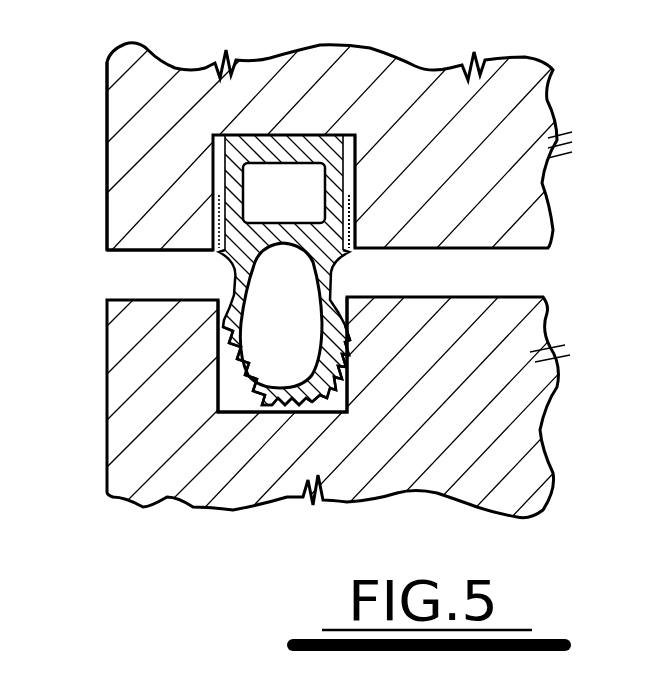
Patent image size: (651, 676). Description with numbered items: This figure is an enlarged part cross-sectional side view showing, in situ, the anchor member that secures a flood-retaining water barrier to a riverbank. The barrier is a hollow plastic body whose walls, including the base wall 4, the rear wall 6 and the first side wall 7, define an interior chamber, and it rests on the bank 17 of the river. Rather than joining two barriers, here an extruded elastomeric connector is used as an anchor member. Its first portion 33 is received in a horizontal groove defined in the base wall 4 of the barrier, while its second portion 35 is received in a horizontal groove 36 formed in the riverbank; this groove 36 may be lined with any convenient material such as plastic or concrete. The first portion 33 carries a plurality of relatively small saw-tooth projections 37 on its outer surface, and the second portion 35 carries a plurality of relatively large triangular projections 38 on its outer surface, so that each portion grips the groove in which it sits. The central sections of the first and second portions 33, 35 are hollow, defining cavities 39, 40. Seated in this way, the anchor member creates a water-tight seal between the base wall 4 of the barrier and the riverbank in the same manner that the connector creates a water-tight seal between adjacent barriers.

The base wall 4 is at (123, 255).
The rear wall 6 is at (107, 191).
The first side wall 7 is at (473, 232).
The bank 17 is at (495, 455).
The first portion 33 is at (289, 136).
The second portion 35 is at (307, 400).
The horizontal groove 36 is at (338, 399).
The saw-tooth projections 37 is at (383, 173).
The triangular projections 38 is at (337, 323).
The cavity 39 is at (297, 163).
The cavity 40 is at (278, 387).